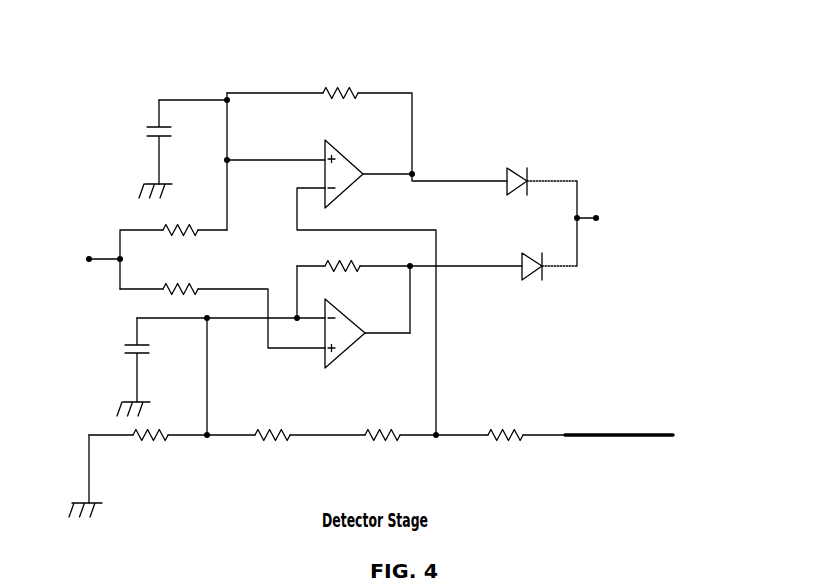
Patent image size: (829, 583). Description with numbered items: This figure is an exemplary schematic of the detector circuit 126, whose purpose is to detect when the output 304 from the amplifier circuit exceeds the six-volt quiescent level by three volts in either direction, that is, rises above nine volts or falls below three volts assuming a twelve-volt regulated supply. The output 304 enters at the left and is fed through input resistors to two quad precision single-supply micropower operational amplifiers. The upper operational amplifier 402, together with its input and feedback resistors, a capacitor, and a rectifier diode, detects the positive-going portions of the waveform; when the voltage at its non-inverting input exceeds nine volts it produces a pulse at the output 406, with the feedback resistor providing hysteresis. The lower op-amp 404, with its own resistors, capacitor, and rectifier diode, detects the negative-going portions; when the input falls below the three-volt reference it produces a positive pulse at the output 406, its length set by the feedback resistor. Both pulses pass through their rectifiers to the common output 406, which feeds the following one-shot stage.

The detector circuit 126 is at (101, 58).
The output from the amplifier circuit 304 is at (89, 256).
The operational amplifier 402 is at (342, 196).
The op-amp 404 is at (343, 355).
The output 406 is at (595, 214).